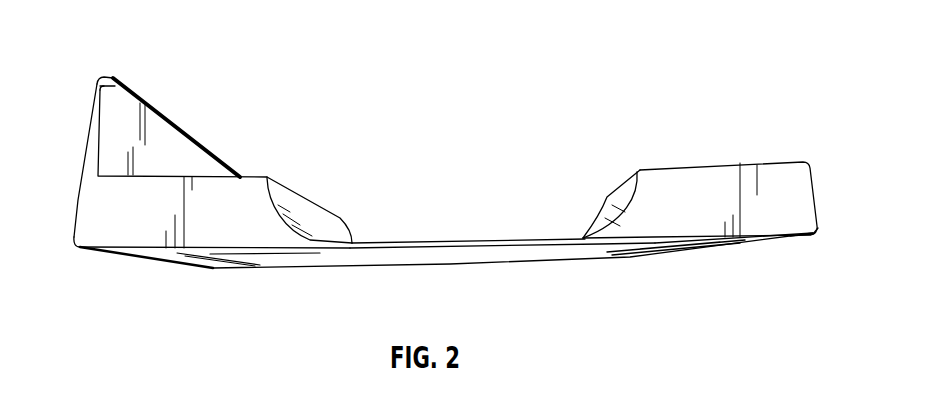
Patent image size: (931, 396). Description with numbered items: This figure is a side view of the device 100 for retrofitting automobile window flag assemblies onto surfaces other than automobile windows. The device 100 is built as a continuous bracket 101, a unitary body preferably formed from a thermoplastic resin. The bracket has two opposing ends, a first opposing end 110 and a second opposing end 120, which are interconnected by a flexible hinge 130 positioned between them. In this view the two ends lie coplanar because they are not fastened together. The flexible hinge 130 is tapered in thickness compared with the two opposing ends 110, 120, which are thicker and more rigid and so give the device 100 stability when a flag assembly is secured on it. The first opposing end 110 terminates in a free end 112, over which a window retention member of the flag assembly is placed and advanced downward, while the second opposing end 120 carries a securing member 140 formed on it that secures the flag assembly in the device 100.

The device 100 is at (106, 38).
The continuous bracket 101 is at (612, 237).
The first opposing end 110 is at (667, 192).
The free end 112 is at (813, 234).
The second opposing end 120 is at (140, 227).
The flexible hinge 130 is at (407, 243).
The securing member 140 is at (98, 117).